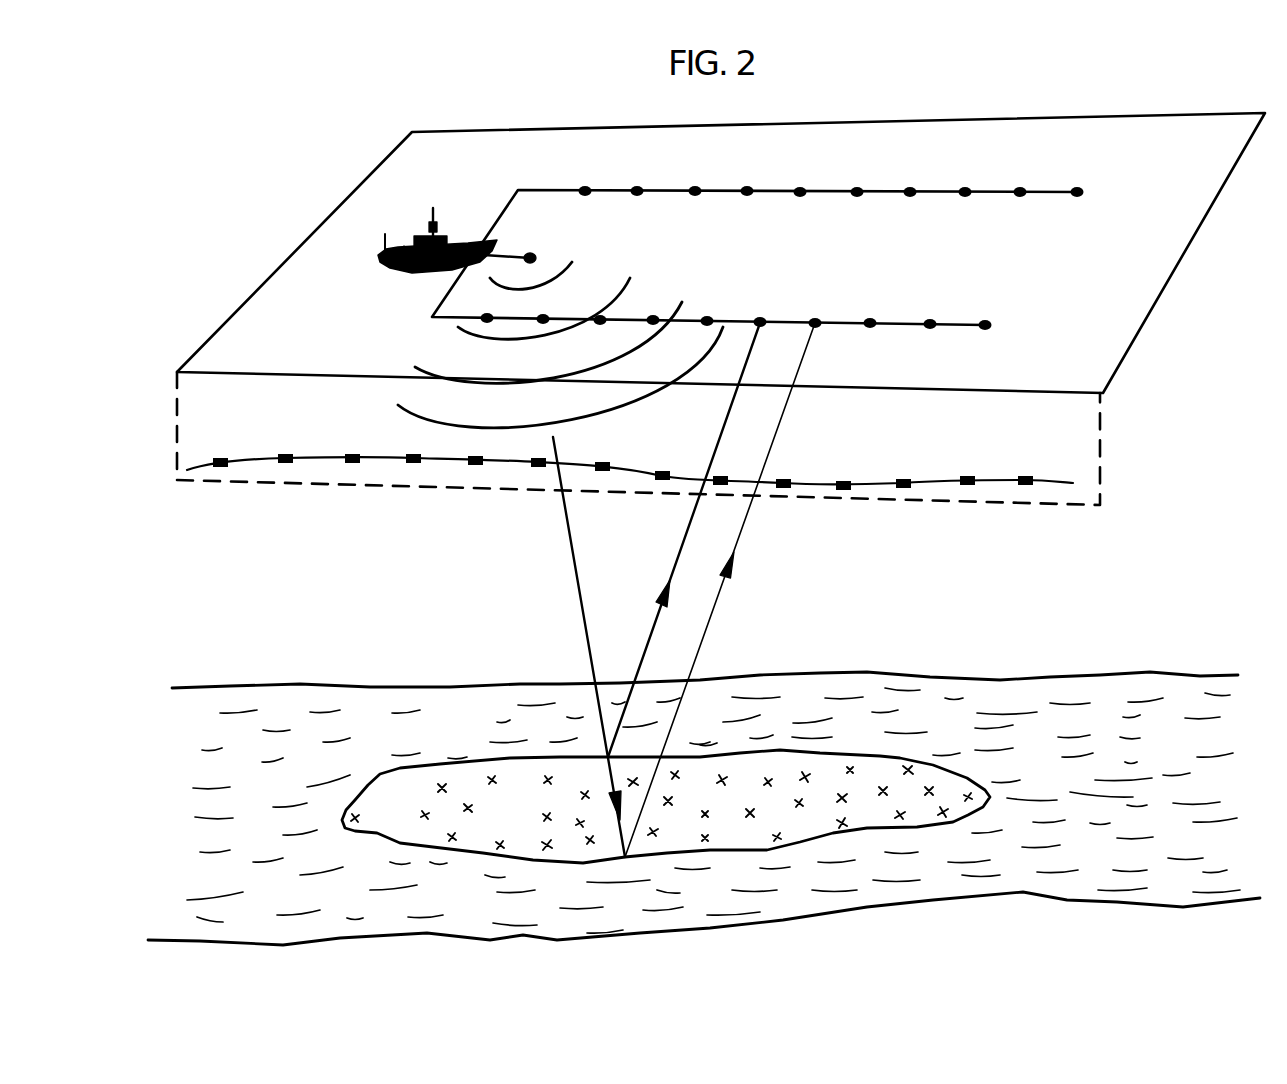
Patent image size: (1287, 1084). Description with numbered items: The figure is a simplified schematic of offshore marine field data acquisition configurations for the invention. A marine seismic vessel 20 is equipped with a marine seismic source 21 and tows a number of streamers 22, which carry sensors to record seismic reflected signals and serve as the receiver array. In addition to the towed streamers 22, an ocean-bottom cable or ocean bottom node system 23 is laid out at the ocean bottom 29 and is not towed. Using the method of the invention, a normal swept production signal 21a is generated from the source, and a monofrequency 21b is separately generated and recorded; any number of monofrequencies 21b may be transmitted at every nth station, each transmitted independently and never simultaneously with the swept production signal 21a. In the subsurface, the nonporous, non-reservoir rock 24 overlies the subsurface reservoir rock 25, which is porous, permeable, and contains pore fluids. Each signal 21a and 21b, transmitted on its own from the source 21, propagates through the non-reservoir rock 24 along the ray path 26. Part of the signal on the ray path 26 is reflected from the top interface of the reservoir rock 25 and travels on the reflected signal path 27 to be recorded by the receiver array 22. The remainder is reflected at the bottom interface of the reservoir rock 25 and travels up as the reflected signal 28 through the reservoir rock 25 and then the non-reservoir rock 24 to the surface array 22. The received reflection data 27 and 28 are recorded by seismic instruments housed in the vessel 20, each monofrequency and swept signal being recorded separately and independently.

The marine seismic vessel 20 is at (437, 237).
The marine seismic source 21 is at (515, 247).
The swept production signal 21a is at (550, 275).
The monofrequency signal 21b is at (544, 308).
The streamers 22 is at (944, 197).
The ocean-bottom cable or ocean bottom node system 23 is at (663, 463).
The nonporous non-reservoir rock 24 is at (704, 808).
The subsurface reservoir rock 25 is at (666, 806).
The ray path 26 is at (583, 647).
The reflected signal path 27 is at (684, 540).
The reflected signal 28 is at (720, 590).
The ocean bottom 29 is at (630, 459).